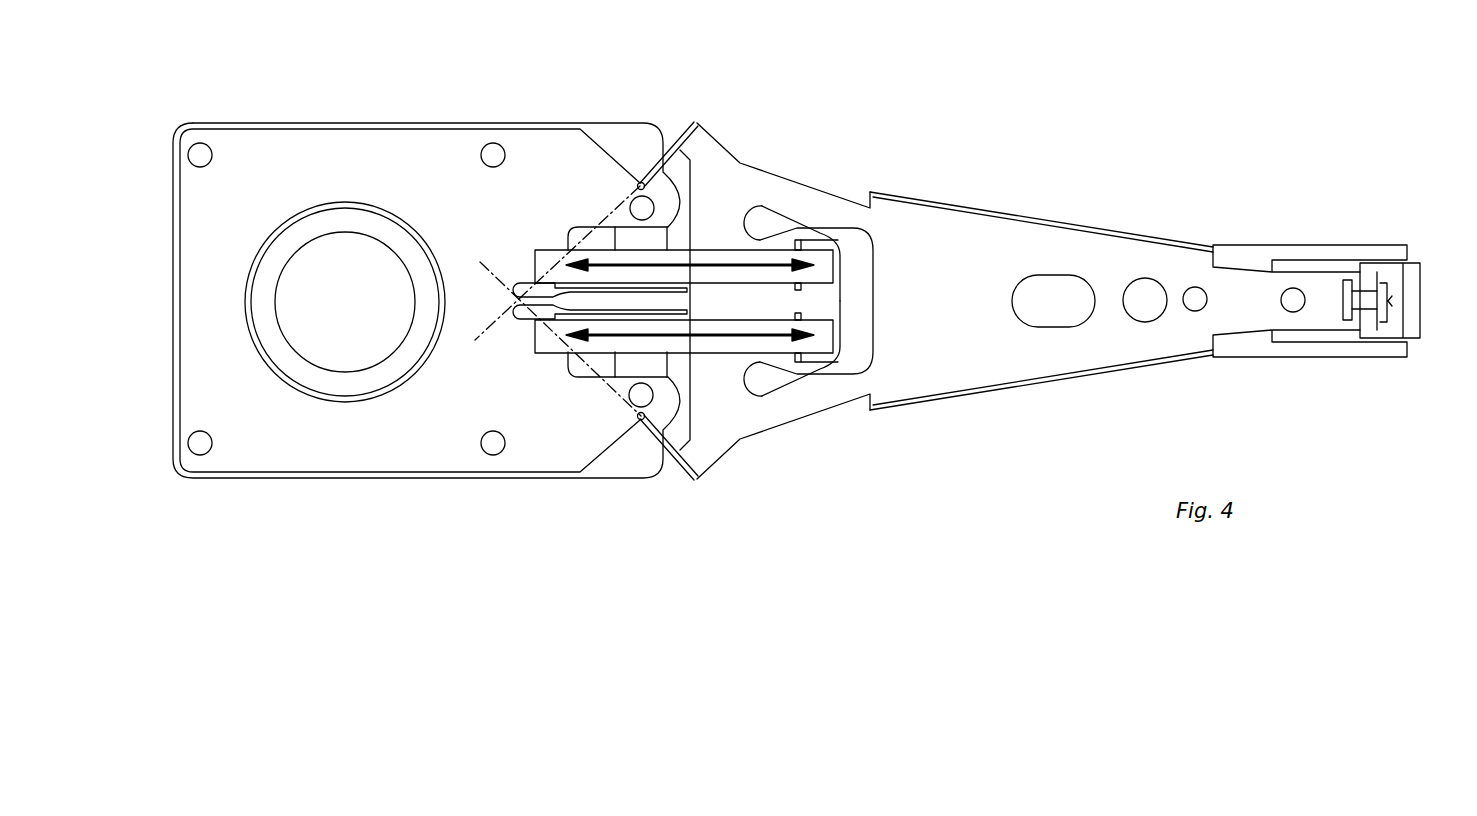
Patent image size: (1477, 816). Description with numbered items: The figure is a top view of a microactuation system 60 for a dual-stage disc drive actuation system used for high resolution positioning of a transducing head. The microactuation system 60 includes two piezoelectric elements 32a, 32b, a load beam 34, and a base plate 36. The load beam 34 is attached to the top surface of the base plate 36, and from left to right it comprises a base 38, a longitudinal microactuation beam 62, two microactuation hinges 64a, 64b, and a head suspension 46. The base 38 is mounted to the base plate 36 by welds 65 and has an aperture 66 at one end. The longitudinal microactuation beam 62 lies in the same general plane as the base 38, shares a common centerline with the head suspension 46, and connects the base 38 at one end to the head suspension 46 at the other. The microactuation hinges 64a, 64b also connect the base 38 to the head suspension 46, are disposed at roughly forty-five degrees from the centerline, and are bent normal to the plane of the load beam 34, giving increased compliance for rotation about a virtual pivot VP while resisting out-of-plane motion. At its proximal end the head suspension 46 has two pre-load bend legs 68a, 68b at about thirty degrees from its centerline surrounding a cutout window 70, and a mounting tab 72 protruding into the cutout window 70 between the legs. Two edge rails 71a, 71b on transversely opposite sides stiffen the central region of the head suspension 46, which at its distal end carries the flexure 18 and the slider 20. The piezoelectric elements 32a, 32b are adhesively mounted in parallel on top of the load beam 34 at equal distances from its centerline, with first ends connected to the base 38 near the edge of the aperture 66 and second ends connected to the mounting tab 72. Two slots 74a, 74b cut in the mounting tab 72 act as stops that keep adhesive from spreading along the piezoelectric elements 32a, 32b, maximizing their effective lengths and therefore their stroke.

The microactuation system 60 is at (948, 53).
The base plate 36 is at (178, 222).
The base 38 is at (282, 145).
The welds 65 is at (200, 140).
The aperture 66 is at (592, 385).
The longitudinal microactuation beam 62 is at (583, 300).
The first piezoelectric element 32a is at (533, 257).
The second piezoelectric element 32b is at (537, 354).
The virtual pivot VP is at (512, 300).
The first microactuation hinge 64a is at (674, 140).
The second microactuation hinge 64b is at (680, 482).
The first pre-load bend leg 68a is at (780, 190).
The second pre-load bend leg 68b is at (777, 410).
The cutout window 70 is at (857, 257).
The mounting tab 72 is at (812, 240).
The first slot 74a is at (803, 288).
The second slot 74b is at (805, 364).
The head suspension 46 is at (967, 225).
The first edge rail 71a is at (1097, 229).
The second edge rail 71b is at (1073, 378).
The slider 20 is at (1413, 320).
The flexure 18 is at (1380, 343).
The load beam 34 is at (682, 505).